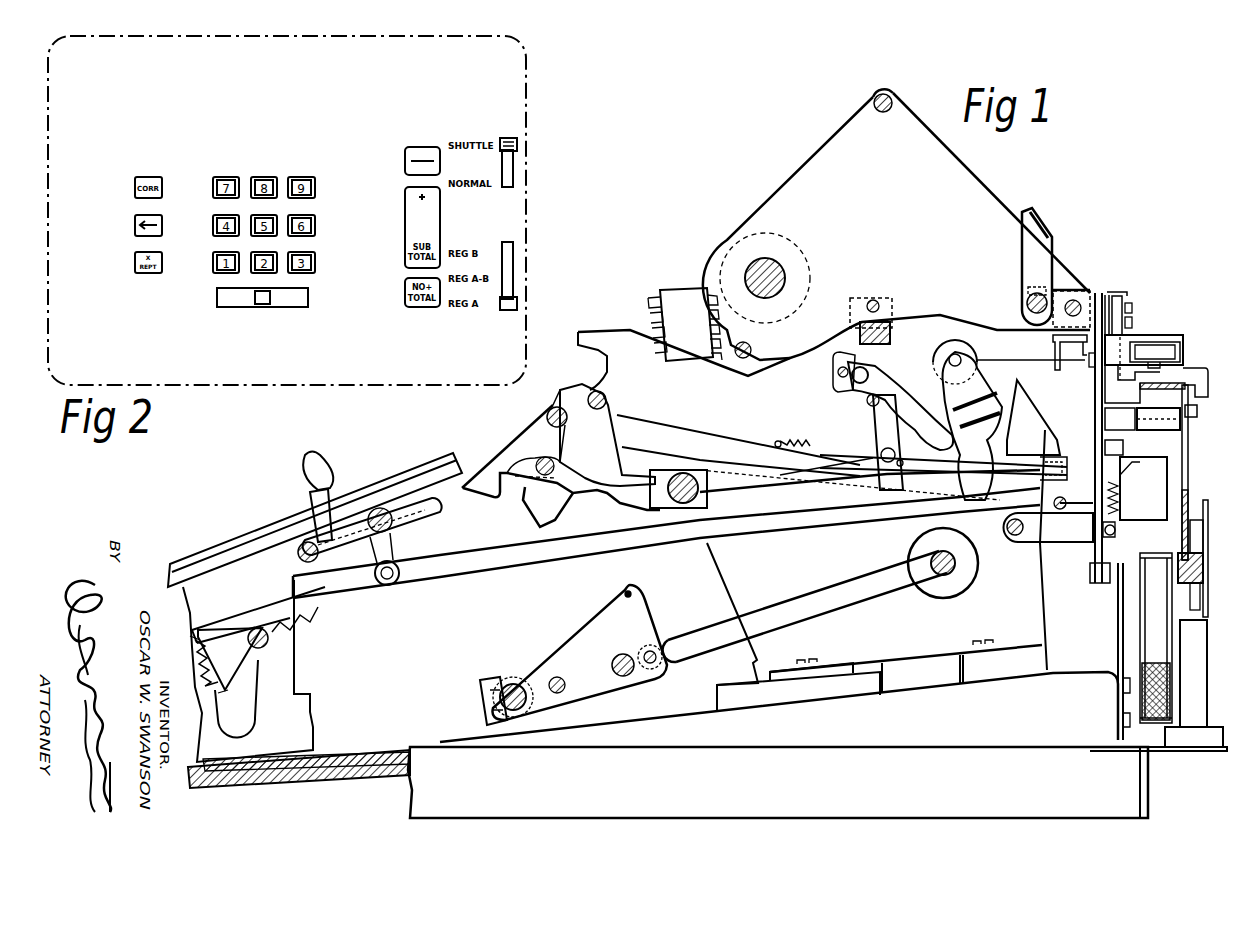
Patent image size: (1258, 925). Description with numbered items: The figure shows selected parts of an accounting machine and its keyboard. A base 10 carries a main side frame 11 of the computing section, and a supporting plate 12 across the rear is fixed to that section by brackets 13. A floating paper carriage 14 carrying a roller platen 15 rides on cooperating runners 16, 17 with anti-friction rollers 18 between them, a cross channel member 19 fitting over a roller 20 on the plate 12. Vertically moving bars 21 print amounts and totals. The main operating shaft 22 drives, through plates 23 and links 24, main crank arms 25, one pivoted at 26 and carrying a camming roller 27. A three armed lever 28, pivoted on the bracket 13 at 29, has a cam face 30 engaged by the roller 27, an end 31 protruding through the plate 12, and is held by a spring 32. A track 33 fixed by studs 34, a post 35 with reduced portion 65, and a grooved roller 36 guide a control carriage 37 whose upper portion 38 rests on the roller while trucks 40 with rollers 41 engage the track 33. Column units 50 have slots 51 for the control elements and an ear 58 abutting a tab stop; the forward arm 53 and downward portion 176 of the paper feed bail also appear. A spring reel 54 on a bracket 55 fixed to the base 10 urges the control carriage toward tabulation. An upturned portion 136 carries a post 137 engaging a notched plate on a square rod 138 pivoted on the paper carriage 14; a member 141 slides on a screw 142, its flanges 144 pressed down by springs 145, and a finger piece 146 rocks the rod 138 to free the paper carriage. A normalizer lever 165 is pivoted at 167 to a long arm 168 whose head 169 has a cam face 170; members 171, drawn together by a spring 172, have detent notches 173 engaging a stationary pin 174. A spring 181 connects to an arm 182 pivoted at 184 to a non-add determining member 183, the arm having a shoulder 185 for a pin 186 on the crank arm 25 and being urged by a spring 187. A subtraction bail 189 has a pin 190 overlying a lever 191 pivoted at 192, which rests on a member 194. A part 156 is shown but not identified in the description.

In FIG. 1, the base 10 is at (1140, 790).
In FIG. 1, the main side frame 11 is at (614, 332).
In FIG. 1, the supporting plate 12 is at (1095, 362).
In FIG. 1, the bracket 13 is at (995, 363).
In FIG. 1, the paper carriage 14 is at (831, 127).
In FIG. 1, the roller platen 15 is at (770, 240).
In FIG. 1, the runner 16 is at (870, 298).
In FIG. 1, the runner 17 is at (868, 365).
In FIG. 1, the anti-friction rollers 18 is at (860, 313).
In FIG. 1, the cross channel member 19 is at (1050, 330).
In FIG. 1, the roller 20 is at (1095, 295).
In FIG. 1, the printing elements 21 is at (682, 290).
In FIG. 1, the main operating shaft 22 is at (512, 684).
In FIG. 1, the plates 23 is at (588, 618).
In FIG. 1, the links 24 is at (838, 615).
In FIG. 1, the main crank arms 25 is at (893, 538).
In FIG. 1, the pivot 26 is at (877, 440).
In FIG. 1, the camming roller 27 is at (975, 348).
In FIG. 1, the three armed lever 28 is at (1038, 400).
In FIG. 1, the pivot 29 is at (1015, 560).
In FIG. 1, the cam face 30 is at (1005, 400).
In FIG. 1, the end of lever arm 31 is at (1116, 530).
In FIG. 1, the spring 32 is at (1120, 498).
In FIG. 1, the track 33 is at (1178, 583).
In FIG. 1, the studs 34 is at (1110, 593).
In FIG. 1, the post 35 is at (1155, 431).
In FIG. 1, the grooved roller 36 is at (1210, 402).
In FIG. 1, the control carriage 37 is at (1191, 470).
In FIG. 1, the upper horizontal portion 38 is at (1195, 398).
In FIG. 1, the trucks 40 is at (1204, 575).
In FIG. 1, the rollers 41 is at (1212, 585).
In FIG. 1, the column units 50 is at (1120, 380).
In FIG. 1, the slot 51 is at (1165, 360).
In FIG. 1, the forward arm 53 is at (1070, 352).
In FIG. 1, the spring reel 54 is at (1165, 631).
In FIG. 1, the bracket 55 is at (1208, 655).
In FIG. 1, the ear 58 is at (1140, 393).
In FIG. 1, the reduced portion 65 is at (1120, 419).
In FIG. 1, the upturned portion 136 is at (1135, 358).
In FIG. 1, the post 137 is at (1116, 292).
In FIG. 1, the square rod 138 is at (1027, 300).
In FIG. 1, the member 141 is at (1200, 522).
In FIG. 1, the screw 142 is at (1133, 308).
In FIG. 1, the flanges 144 is at (1124, 298).
In FIG. 1, the springs 145 is at (1133, 323).
In FIG. 1, the finger piece 146 is at (1022, 245).
In FIG. 1, the key lever 156 is at (442, 510).
In FIG. 2, the normalizer lever 165 is at (516, 142).
In FIG. 1, the normalizer lever 165 is at (330, 452).
In FIG. 1, the pivot 167 is at (398, 565).
In FIG. 1, the long arm 168 is at (695, 540).
In FIG. 1, the enlarged head portion 169 is at (1150, 520).
In FIG. 1, the cam face 170 is at (1133, 465).
In FIG. 1, the members 171 is at (266, 614).
In FIG. 1, the spring 172 is at (208, 695).
In FIG. 1, the detent notches 173 is at (313, 605).
In FIG. 1, the pin 174 is at (268, 655).
In FIG. 1, the downwardly extending portion 176 is at (1104, 380).
In FIG. 1, the spring 181 is at (1055, 508).
In FIG. 1, the arm 182 is at (698, 435).
In FIG. 1, the non-add determining member 183 is at (537, 418).
In FIG. 1, the pivot 184 is at (575, 400).
In FIG. 1, the shoulder 185 is at (915, 470).
In FIG. 1, the pin 186 is at (895, 455).
In FIG. 1, the spring 187 is at (795, 440).
In FIG. 1, the subtraction bail 189 is at (902, 460).
In FIG. 1, the pin 190 is at (868, 455).
In FIG. 1, the lever 191 is at (1045, 455).
In FIG. 1, the pivot 192 is at (700, 488).
In FIG. 1, the member 194 is at (1125, 452).